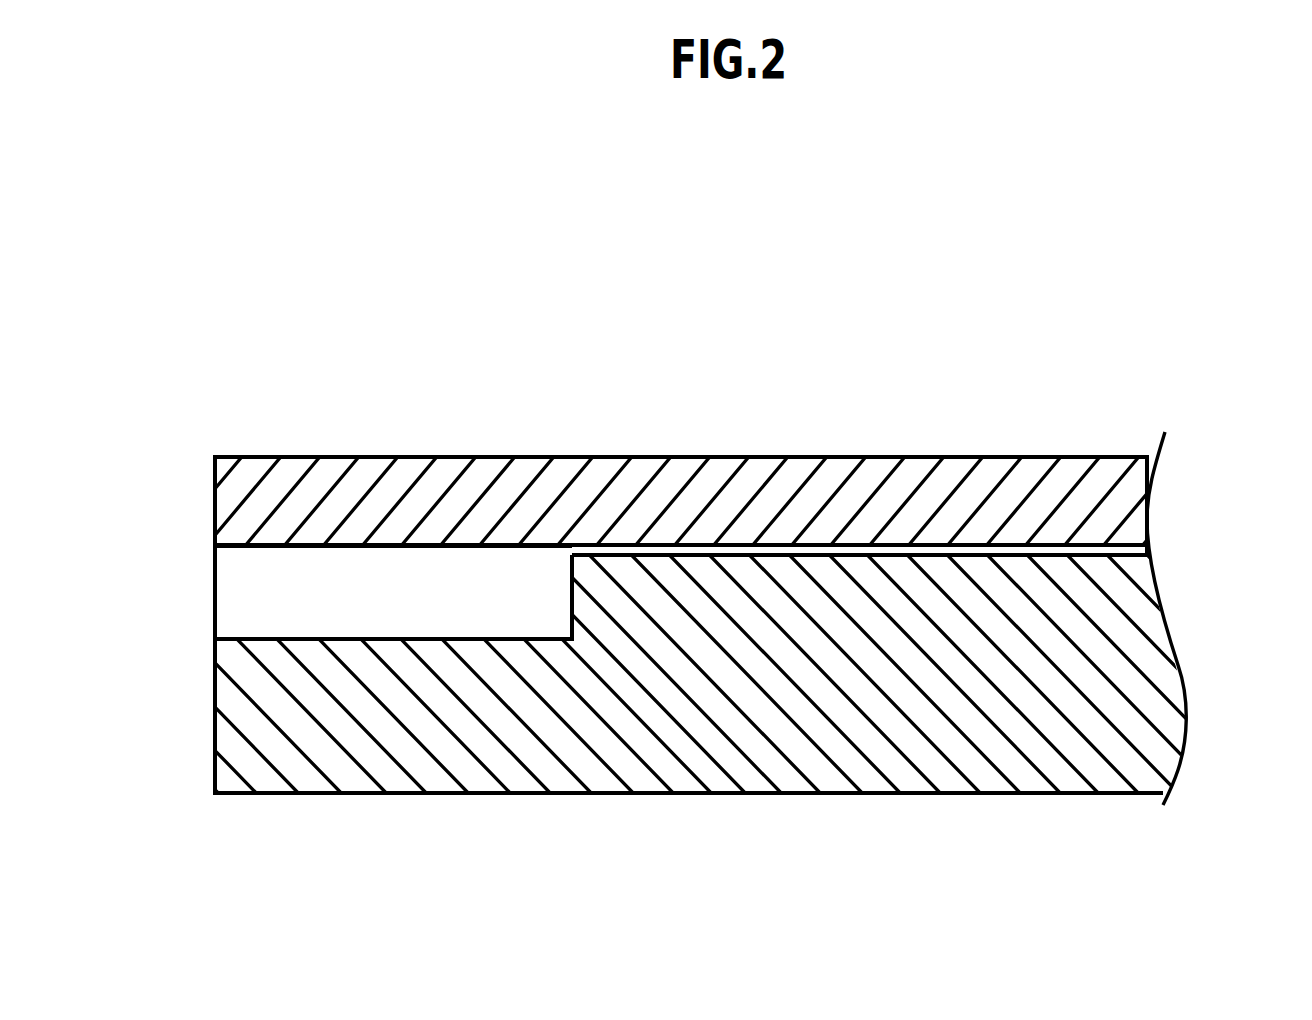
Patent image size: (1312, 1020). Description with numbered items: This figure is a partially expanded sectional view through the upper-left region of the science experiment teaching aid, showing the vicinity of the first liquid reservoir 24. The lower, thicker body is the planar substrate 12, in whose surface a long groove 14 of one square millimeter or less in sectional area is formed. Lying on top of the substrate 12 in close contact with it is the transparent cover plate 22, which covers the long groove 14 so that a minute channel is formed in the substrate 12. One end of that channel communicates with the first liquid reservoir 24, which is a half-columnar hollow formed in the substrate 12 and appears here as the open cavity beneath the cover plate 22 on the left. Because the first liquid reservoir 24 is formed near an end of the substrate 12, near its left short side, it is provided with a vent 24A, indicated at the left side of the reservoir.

The substrate 12 is at (1147, 668).
The long groove 14 is at (878, 552).
The transparent cover plate 22 is at (1125, 492).
The first liquid reservoir 24 is at (397, 608).
The vent 24A is at (242, 590).